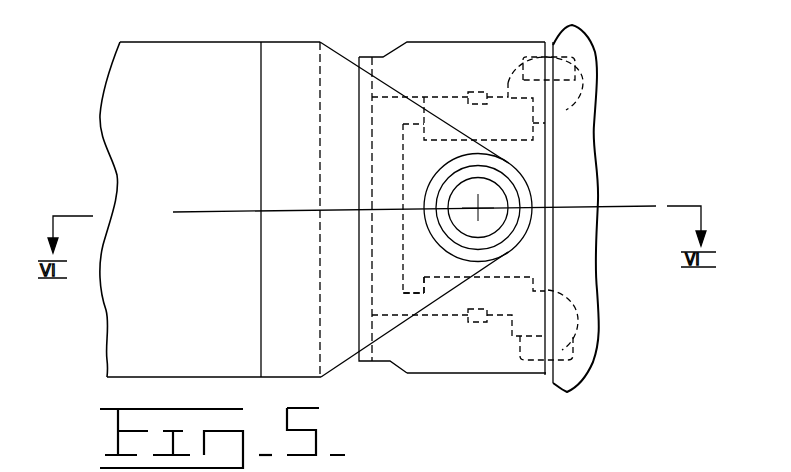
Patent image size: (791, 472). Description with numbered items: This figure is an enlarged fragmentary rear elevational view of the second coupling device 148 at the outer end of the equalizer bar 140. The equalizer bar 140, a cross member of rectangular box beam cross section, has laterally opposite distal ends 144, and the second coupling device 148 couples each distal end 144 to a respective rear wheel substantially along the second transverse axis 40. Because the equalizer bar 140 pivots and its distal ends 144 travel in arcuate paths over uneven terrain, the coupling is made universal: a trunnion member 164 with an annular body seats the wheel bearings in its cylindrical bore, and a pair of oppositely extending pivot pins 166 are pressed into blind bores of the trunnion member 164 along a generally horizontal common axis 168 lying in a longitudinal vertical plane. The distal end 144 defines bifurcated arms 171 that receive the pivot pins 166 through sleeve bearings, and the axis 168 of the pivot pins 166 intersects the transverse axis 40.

The second transverse axis 40 is at (238, 208).
The equalizer bar 140 is at (118, 75).
The distal ends 144 is at (289, 55).
The second coupling device 148 is at (464, 43).
The trunnion member 164 is at (467, 375).
The pivot pins 166 is at (506, 226).
The common axis 168 is at (483, 203).
The bifurcated arms 171 is at (432, 288).